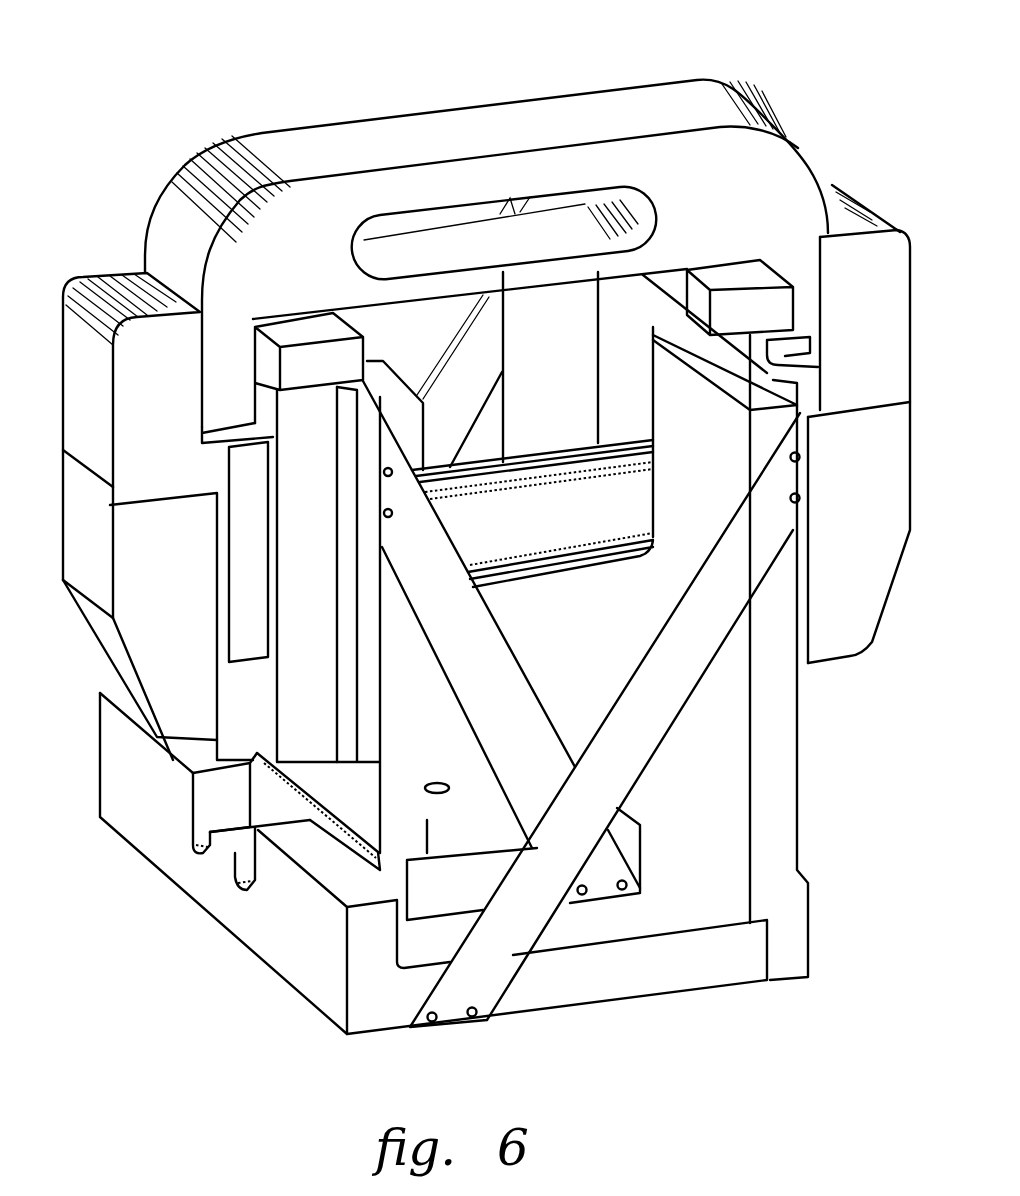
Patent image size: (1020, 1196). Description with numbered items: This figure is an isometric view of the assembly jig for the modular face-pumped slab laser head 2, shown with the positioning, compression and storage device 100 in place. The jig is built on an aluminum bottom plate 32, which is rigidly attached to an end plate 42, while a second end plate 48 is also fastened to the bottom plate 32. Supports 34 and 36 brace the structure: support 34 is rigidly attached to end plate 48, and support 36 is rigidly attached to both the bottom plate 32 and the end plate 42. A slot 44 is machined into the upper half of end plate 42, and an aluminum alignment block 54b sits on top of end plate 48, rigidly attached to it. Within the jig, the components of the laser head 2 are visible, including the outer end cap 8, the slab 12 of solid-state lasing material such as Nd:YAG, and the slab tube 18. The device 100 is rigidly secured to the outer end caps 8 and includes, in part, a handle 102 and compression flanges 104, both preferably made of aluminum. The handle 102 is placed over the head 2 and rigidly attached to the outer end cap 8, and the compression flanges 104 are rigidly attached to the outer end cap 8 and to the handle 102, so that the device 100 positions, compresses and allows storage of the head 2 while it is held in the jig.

The modular face-pumped slab laser head 2 is at (813, 867).
The outer end cap 8 is at (310, 620).
The slab 12 is at (567, 523).
The slab tube 18 is at (533, 580).
The bottom plate 32 is at (310, 960).
The support 34 is at (501, 642).
The support 36 is at (605, 681).
The end plate 42 is at (780, 820).
The slot 44 is at (630, 352).
The end plate 48 is at (329, 811).
The alignment block 54b is at (330, 747).
The positioning, compression and storage device 100 is at (140, 274).
The handle 102 is at (753, 168).
The compression flanges 104 is at (486, 472).